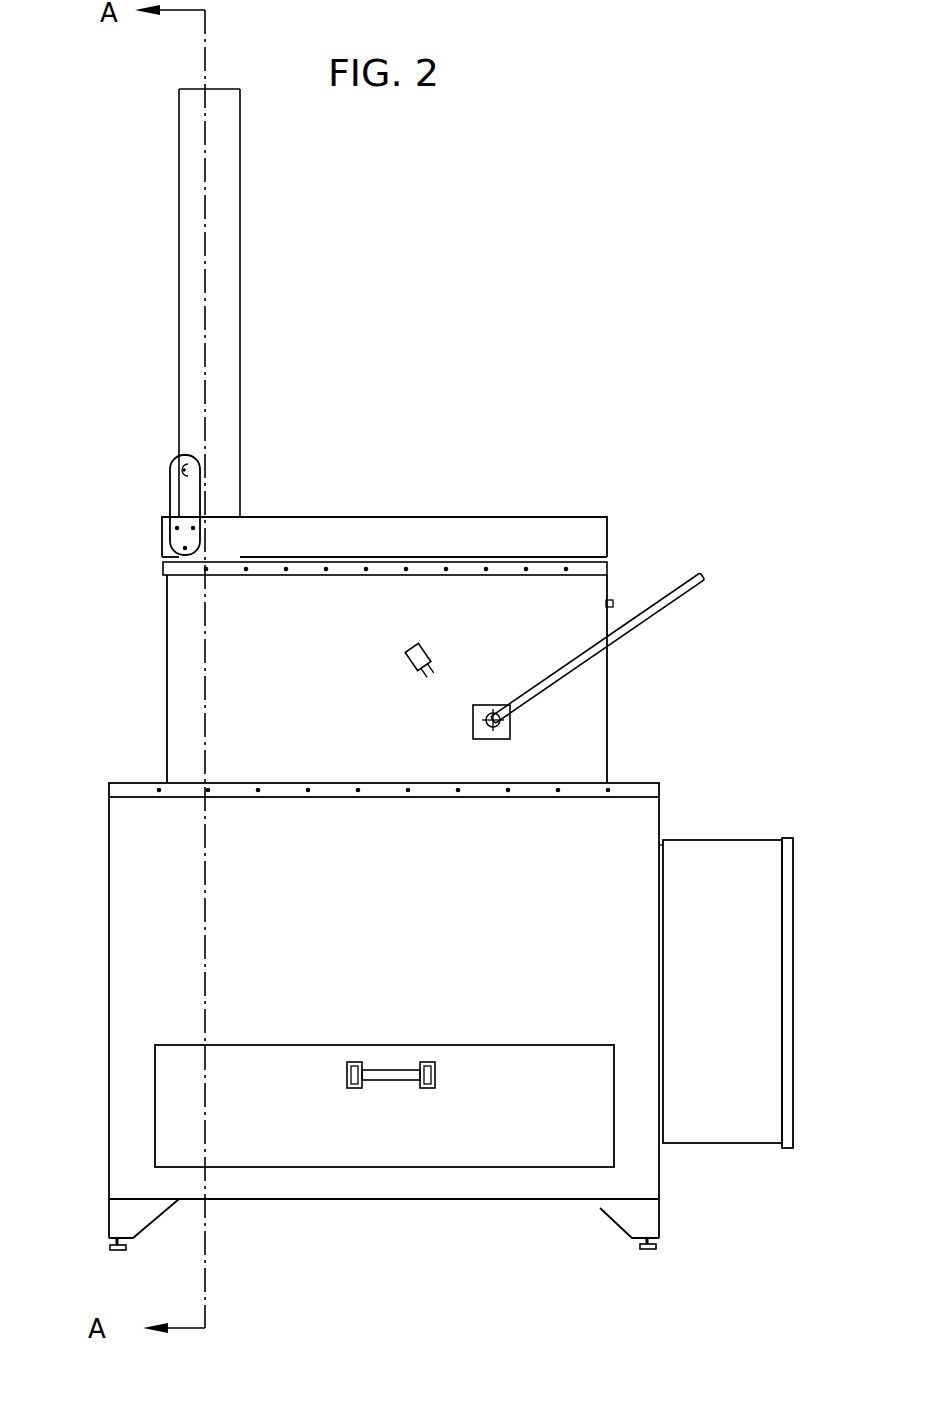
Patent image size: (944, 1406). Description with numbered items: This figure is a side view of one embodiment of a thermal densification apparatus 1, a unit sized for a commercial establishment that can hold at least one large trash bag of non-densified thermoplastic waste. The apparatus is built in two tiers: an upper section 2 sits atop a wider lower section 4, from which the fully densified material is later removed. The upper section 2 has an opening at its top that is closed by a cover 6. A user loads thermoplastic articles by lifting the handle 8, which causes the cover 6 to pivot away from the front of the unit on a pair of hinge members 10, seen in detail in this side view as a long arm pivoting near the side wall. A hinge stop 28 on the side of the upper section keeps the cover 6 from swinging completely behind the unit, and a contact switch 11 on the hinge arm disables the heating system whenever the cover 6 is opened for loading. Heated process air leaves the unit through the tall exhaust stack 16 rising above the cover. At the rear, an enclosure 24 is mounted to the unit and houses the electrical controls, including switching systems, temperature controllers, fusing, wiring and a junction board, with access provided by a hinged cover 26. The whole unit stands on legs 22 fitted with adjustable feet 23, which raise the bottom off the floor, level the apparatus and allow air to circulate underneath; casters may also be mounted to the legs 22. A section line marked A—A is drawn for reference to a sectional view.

The thermal densification apparatus 1 is at (660, 755).
The upper section 2 is at (167, 628).
The lower section 4 is at (108, 912).
The cover 6 is at (515, 515).
The handle 8 is at (172, 470).
The hinge members 10 is at (463, 672).
The contact switch 11 is at (412, 670).
The exhaust stack 16 is at (241, 332).
The legs 22 is at (157, 1220).
The adjustable feet 23 is at (113, 1252).
The enclosure 24 is at (710, 838).
The hinged cover 26 is at (793, 969).
The hinge stop 28 is at (612, 600).